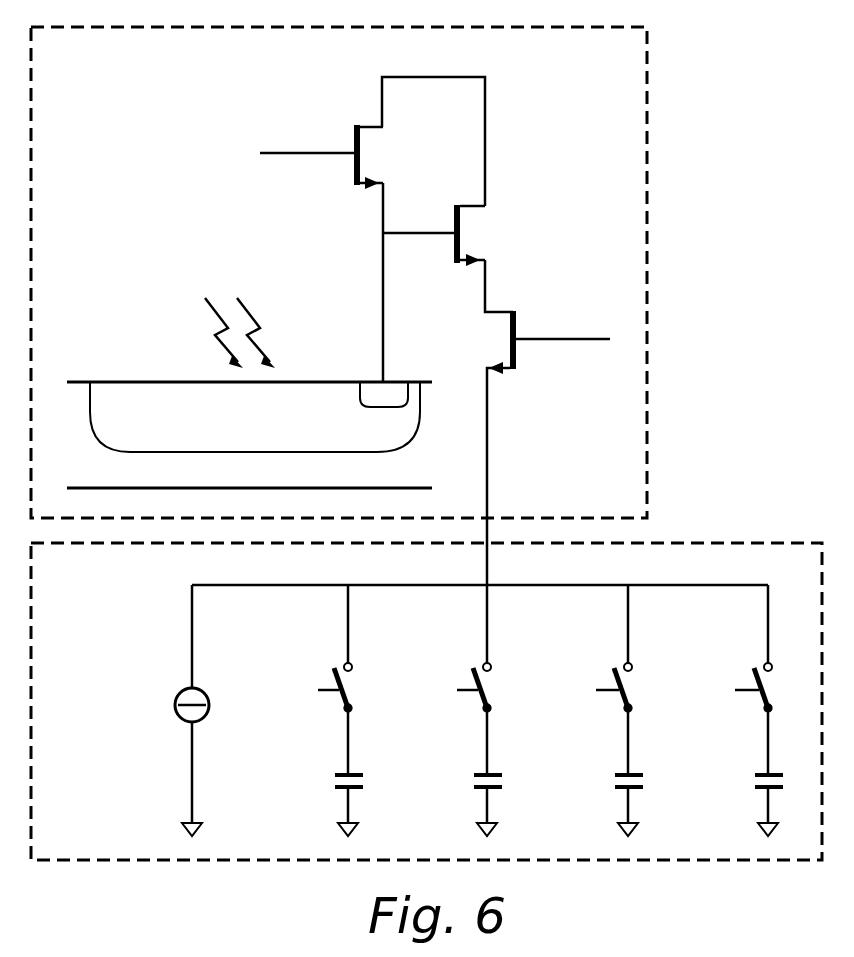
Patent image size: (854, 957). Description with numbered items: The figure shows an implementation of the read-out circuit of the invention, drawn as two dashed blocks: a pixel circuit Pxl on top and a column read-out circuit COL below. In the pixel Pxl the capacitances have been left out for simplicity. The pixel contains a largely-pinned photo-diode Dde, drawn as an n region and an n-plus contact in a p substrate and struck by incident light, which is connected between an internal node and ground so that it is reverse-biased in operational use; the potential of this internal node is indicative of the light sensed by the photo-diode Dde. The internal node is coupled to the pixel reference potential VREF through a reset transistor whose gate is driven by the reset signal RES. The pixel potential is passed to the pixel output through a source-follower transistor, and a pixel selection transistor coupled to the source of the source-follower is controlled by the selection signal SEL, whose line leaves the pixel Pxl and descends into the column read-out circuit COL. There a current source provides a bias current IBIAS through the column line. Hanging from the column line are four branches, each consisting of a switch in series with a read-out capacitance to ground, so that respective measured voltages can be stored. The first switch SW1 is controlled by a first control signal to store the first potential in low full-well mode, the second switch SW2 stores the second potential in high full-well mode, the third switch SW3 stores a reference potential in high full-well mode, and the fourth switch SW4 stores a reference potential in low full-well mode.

The pixel circuit Pxl is at (339, 272).
The column read-out circuit COL is at (426, 701).
The pixel reference potential VREF is at (433, 126).
The reset signal RES is at (307, 137).
The selection signal SEL is at (563, 324).
The photo-diode Dde is at (130, 341).
The bias current IBIAS is at (157, 675).
The first switch SW1 is at (343, 663).
The second switch SW2 is at (482, 663).
The third switch SW3 is at (623, 663).
The fourth switch SW4 is at (763, 663).